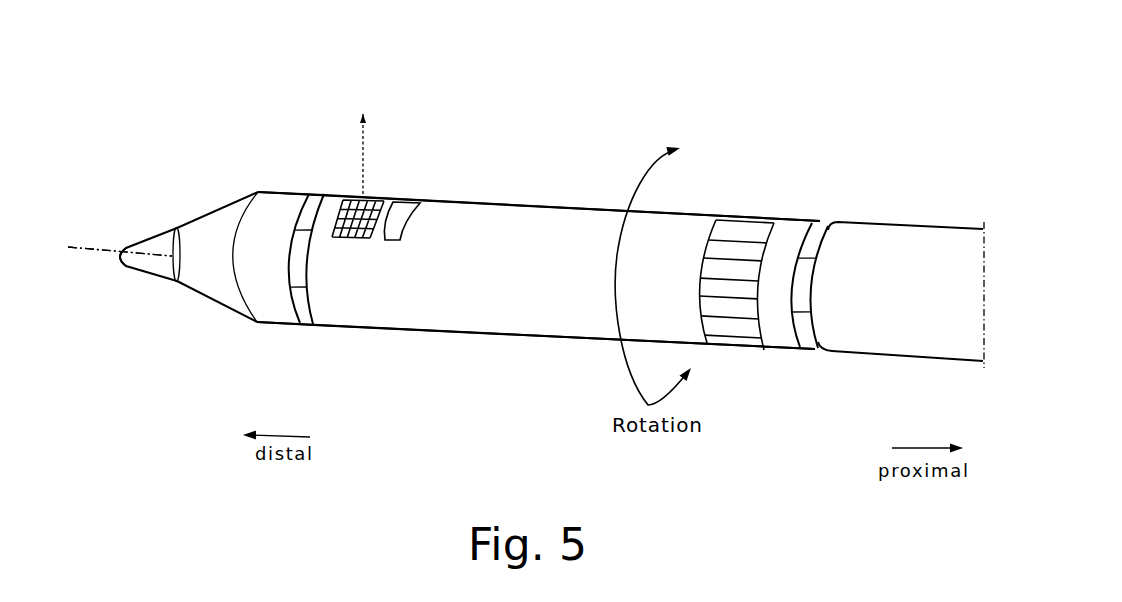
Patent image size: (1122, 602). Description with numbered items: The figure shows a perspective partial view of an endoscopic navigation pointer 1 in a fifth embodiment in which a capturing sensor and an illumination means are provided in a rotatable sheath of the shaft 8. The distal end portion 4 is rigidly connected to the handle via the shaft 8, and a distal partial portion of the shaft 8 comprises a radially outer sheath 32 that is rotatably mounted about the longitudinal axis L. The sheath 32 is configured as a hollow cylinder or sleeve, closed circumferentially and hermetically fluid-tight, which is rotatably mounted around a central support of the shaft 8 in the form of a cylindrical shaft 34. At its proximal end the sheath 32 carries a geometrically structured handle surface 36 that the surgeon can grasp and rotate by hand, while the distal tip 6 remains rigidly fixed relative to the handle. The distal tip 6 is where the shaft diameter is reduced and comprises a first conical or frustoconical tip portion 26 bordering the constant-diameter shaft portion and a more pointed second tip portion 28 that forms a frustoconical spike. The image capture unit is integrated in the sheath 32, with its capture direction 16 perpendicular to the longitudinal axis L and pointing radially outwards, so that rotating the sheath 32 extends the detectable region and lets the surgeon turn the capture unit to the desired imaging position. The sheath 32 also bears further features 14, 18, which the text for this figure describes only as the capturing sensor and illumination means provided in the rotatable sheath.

The endoscopic navigation pointer 1 is at (228, 78).
The distal end portion 4 is at (418, 94).
The distal tip 6 is at (200, 292).
The shaft 8 is at (750, 160).
The grid marking 14 is at (355, 198).
The capture direction 16 is at (362, 126).
The marker slot 18 is at (409, 201).
The first conical tip portion 26 is at (221, 228).
The second tip portion 28 is at (156, 243).
The rotatable sheath 32 is at (413, 333).
The cylindrical shaft 34 is at (296, 262).
The handle surface 36 is at (733, 312).
The longitudinal axis L is at (87, 249).